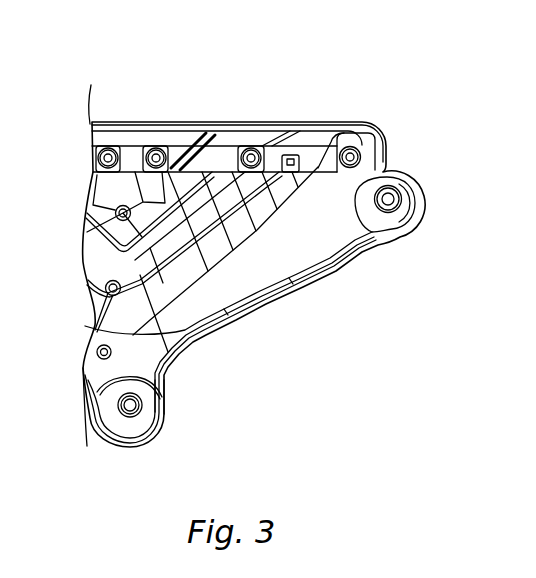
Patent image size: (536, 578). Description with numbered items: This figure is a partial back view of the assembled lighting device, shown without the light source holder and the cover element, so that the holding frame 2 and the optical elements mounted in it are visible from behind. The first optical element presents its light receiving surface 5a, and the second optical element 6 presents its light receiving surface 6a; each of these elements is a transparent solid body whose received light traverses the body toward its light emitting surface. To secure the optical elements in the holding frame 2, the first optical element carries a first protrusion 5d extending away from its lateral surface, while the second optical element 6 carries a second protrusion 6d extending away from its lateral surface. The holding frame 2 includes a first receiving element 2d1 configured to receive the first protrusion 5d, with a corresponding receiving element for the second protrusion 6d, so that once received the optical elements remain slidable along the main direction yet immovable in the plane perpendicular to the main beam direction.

The holding frame 2 is at (135, 138).
The first receiving element 2d1 is at (293, 172).
The light receiving surface 5a is at (69, 260).
The first protrusion 5d is at (316, 126).
The second optical element 6 is at (342, 223).
The light receiving surface 6a is at (69, 307).
The second protrusion 6d is at (393, 182).